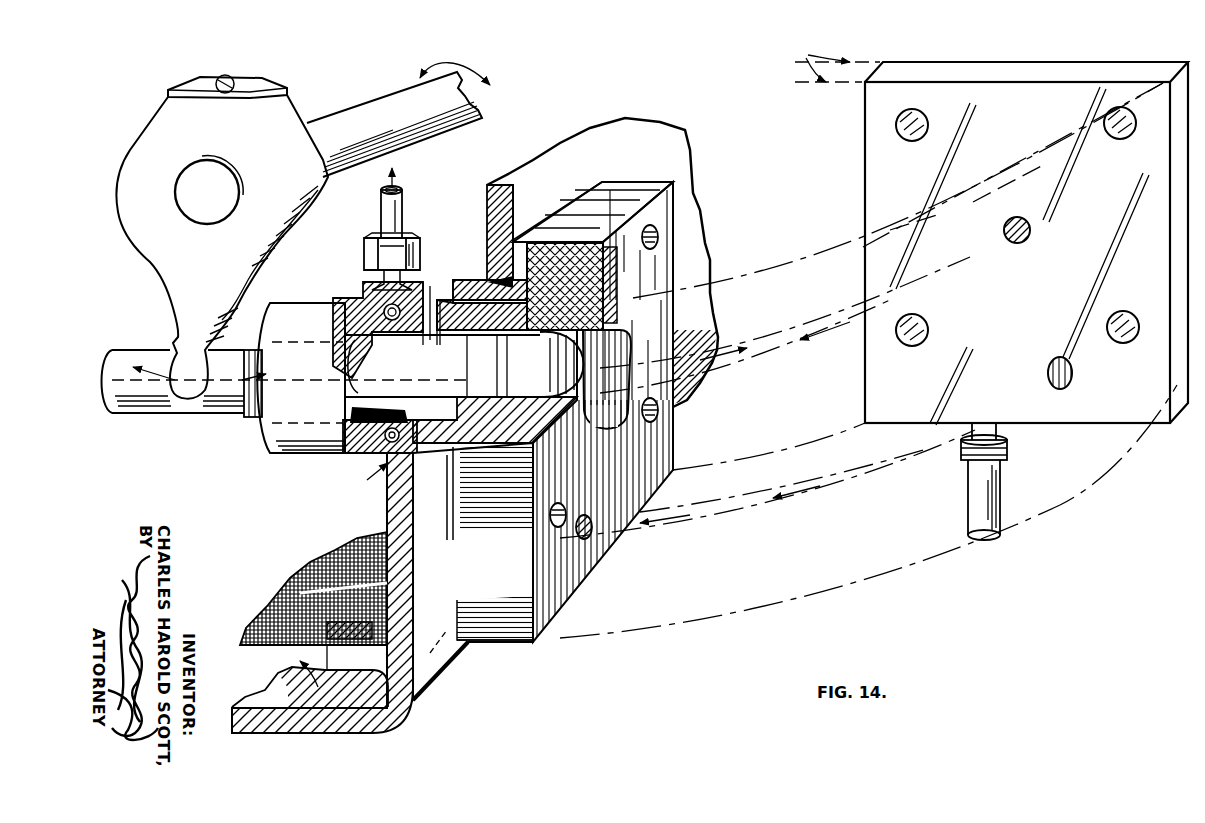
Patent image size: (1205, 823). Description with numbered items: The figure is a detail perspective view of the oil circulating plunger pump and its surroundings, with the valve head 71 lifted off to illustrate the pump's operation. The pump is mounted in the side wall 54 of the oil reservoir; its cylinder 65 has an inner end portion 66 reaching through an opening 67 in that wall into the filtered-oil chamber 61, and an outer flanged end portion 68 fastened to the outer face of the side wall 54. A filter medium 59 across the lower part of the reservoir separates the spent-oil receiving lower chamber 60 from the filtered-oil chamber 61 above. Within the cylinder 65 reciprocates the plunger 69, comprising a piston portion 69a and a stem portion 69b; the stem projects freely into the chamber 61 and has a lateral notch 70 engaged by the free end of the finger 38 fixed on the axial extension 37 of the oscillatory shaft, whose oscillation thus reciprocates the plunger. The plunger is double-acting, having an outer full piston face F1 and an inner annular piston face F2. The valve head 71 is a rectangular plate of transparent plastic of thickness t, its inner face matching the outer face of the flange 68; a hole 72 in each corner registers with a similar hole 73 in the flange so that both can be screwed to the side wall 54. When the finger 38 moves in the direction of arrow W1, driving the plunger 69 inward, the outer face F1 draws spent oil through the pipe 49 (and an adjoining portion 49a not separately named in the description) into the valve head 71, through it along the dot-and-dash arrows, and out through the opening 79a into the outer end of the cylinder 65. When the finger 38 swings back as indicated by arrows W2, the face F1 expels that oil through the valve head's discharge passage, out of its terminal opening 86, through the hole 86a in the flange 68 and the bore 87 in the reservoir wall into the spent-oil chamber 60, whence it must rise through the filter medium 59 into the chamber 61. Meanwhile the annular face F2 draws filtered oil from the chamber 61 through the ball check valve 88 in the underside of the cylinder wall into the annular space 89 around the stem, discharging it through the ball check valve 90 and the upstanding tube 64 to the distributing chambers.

The axial extension 37 is at (362, 106).
The finger 38 is at (162, 259).
The pipe 49 is at (975, 515).
The pin head 49a is at (1004, 434).
The side wall 54 is at (692, 211).
The filter medium 59 is at (305, 583).
The spent-oil receiving lower chamber 60 is at (285, 675).
The filtered-oil chamber 61 is at (273, 536).
The upstanding tube 64 is at (403, 212).
The cylinder 65 is at (422, 292).
The inner end portion 66 is at (282, 455).
The opening 67 is at (517, 232).
The outer flanged end portion 68 is at (513, 634).
The plunger member 69 is at (250, 418).
The piston portion 69a is at (483, 363).
The stem portion 69b is at (128, 414).
The lateral recess 70 is at (175, 347).
The valve head 71 is at (972, 58).
The hole 72 is at (928, 128).
The holes 73 is at (660, 240).
The opening 79a is at (1030, 233).
The terminal opening 86 is at (1068, 384).
The hole 86a is at (592, 536).
The bore 87 is at (478, 650).
The ball check valve 88 is at (385, 447).
The annular space 89 is at (410, 338).
The ball check valve 90 is at (372, 300).
The outer full piston face F1 is at (607, 380).
The inner annular piston face F2 is at (455, 298).
The arrow W1 is at (146, 380).
The arrows W2 is at (240, 375).
The thickness t is at (837, 62).